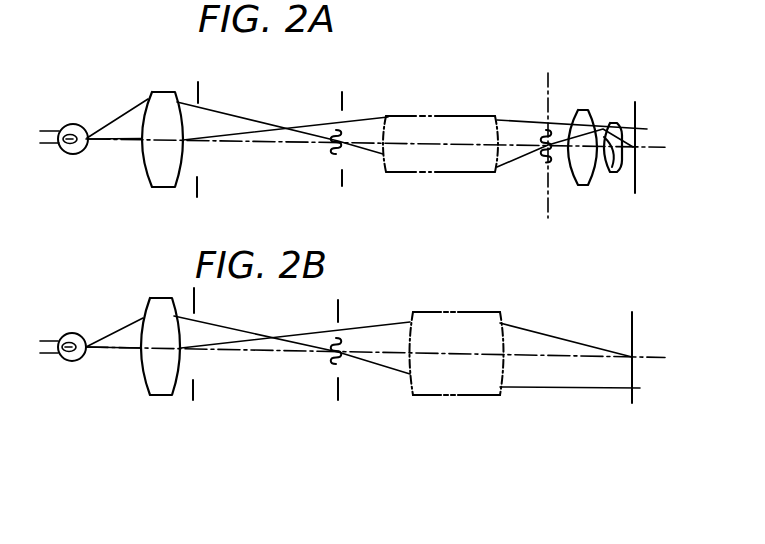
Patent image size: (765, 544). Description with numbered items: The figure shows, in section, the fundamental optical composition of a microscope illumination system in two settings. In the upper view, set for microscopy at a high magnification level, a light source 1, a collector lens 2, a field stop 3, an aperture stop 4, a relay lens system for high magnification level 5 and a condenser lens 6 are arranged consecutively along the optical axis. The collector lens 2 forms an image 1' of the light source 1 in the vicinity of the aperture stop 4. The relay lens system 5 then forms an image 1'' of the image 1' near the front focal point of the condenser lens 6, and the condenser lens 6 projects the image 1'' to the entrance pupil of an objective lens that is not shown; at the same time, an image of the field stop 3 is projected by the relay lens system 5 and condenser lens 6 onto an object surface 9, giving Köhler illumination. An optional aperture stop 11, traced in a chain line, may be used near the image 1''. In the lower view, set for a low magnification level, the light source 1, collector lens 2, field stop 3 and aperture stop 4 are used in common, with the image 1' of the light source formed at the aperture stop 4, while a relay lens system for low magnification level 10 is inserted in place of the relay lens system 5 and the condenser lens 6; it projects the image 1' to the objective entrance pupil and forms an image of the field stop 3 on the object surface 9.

In FIG. 2A, the light source 1 is at (64, 117).
In FIG. 2B, the light source 1 is at (63, 324).
In FIG. 2A, the image of the light source 1' is at (319, 152).
In FIG. 2B, the image of the light source 1' is at (320, 364).
In FIG. 2A, the image of the image 1' 1'' is at (531, 159).
In FIG. 2A, the collector lens 2 is at (163, 102).
In FIG. 2B, the collector lens 2 is at (163, 312).
In FIG. 2A, the field stop 3 is at (197, 187).
In FIG. 2B, the field stop 3 is at (193, 392).
In FIG. 2A, the aperture stop 4 is at (342, 186).
In FIG. 2B, the aperture stop 4 is at (338, 392).
In FIG. 2A, the relay lens system for high magnification level 5 is at (442, 166).
In FIG. 2A, the condenser lens 6 is at (617, 158).
In FIG. 2A, the object surface 9 is at (634, 108).
In FIG. 2B, the object surface 9 is at (630, 318).
In FIG. 2B, the relay lens system for low magnification level 10 is at (481, 388).
In FIG. 2A, the aperture stop 11 is at (548, 88).